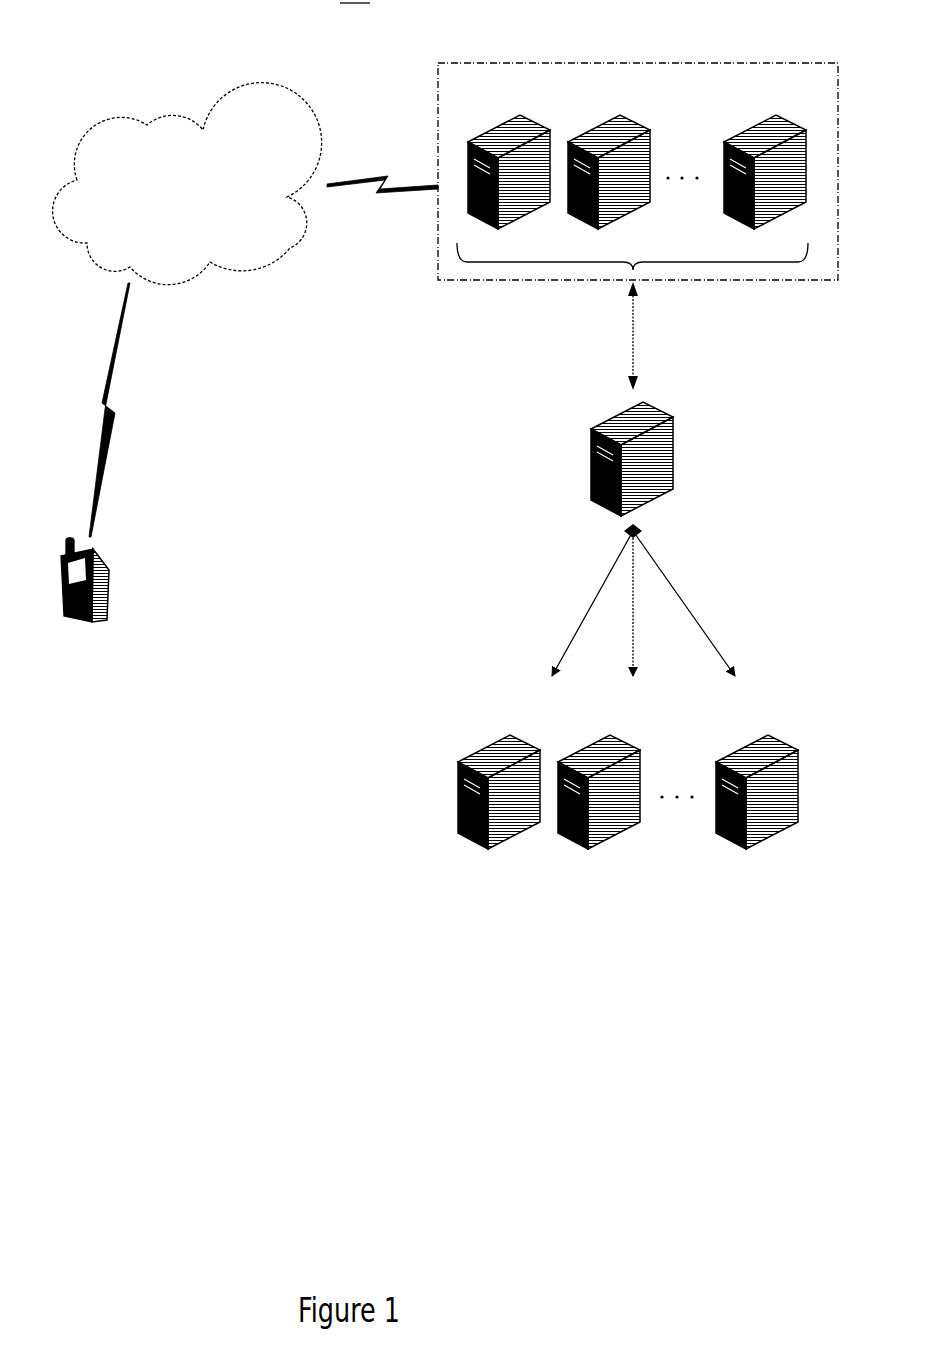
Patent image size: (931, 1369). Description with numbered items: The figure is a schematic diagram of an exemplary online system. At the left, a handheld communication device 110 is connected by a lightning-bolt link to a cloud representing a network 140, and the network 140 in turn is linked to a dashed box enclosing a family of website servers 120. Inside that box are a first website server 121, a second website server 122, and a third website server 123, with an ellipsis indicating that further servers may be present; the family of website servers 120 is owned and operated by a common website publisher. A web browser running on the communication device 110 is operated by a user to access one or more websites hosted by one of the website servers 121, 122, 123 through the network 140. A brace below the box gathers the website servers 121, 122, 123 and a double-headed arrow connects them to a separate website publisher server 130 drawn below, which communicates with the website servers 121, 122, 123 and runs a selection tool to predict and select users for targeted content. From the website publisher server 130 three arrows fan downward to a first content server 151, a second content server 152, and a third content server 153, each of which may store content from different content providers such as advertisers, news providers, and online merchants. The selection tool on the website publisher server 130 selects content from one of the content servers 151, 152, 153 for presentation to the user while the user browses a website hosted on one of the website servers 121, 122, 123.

The communication device 110 is at (108, 564).
The family of website servers 120 is at (604, 63).
The first website server 121 is at (518, 114).
The second website server 122 is at (618, 114).
The third website server 123 is at (775, 114).
The website publisher server 130 is at (673, 418).
The network 140 is at (187, 184).
The first content server 151 is at (510, 735).
The second content server 152 is at (611, 735).
The third content server 153 is at (769, 735).